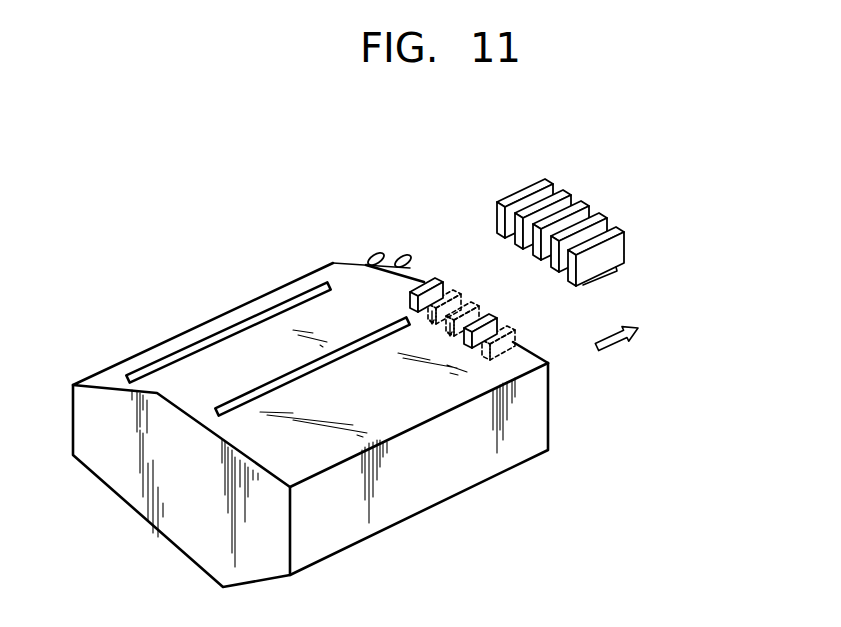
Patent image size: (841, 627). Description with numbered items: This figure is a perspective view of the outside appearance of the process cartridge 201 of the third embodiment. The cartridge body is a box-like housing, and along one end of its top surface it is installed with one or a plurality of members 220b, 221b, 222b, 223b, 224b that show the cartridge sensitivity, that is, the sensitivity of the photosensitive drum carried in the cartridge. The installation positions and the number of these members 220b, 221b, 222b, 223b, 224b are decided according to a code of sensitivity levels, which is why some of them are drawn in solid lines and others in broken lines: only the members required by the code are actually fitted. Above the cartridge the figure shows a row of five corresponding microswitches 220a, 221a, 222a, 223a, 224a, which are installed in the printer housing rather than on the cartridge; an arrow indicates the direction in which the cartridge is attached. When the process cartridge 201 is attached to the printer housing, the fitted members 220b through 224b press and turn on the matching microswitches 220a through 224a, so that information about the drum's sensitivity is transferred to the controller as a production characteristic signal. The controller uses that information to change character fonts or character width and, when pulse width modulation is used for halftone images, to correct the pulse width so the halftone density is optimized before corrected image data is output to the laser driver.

The process cartridge 201 is at (93, 478).
The microswitch 220a is at (520, 188).
The microswitch 221a is at (563, 190).
The microswitch 222a is at (583, 203).
The microswitch 223a is at (602, 215).
The microswitch 224a is at (620, 232).
The member showing cartridge sensitivity 220b is at (438, 278).
The member showing cartridge sensitivity 221b is at (465, 290).
The member showing cartridge sensitivity 222b is at (480, 310).
The member showing cartridge sensitivity 223b is at (500, 317).
The member showing cartridge sensitivity 224b is at (513, 327).